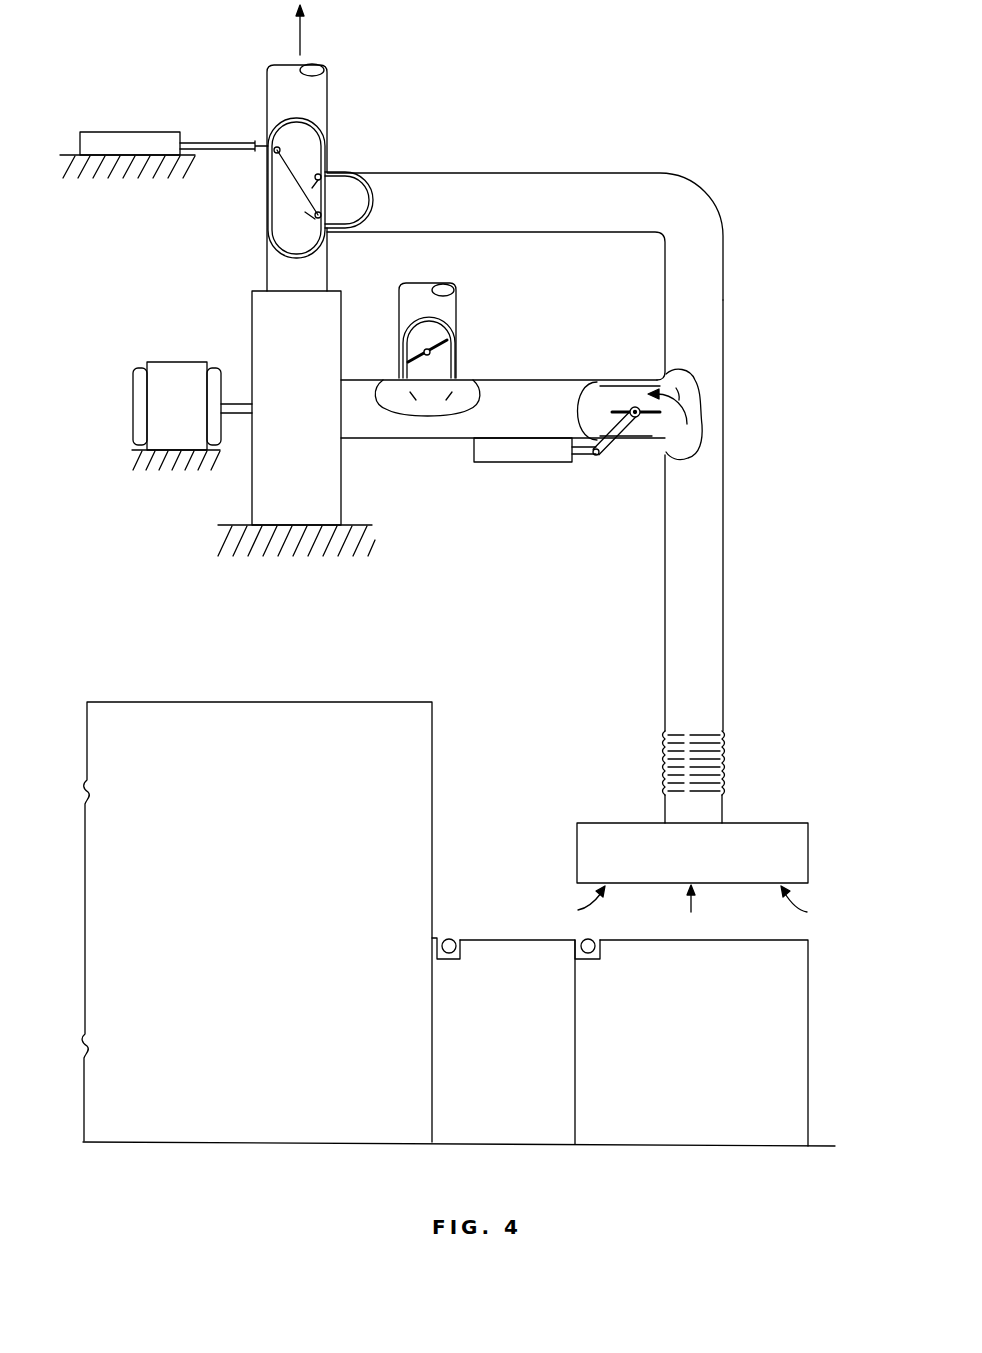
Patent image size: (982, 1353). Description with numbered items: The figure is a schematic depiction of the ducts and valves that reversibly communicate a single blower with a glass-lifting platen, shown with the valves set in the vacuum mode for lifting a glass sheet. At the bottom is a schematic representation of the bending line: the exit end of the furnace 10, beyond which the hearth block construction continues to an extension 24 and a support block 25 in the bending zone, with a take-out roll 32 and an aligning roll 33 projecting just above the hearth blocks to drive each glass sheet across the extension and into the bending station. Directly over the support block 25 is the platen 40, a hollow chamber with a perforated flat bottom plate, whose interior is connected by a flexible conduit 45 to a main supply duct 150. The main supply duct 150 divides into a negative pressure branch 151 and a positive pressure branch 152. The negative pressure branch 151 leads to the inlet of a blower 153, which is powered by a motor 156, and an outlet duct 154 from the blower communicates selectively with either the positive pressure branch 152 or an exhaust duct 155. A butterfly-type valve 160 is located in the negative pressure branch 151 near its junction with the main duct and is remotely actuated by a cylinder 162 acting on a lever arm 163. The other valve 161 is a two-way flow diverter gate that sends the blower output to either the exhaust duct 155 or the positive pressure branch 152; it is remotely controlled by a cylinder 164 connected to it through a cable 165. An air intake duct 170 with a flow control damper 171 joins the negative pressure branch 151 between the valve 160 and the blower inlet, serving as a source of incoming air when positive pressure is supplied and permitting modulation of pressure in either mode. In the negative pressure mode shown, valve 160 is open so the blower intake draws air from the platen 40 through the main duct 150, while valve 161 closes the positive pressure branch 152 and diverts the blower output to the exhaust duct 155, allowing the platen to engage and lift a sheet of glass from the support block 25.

The furnace 10 is at (257, 702).
The extension 24 is at (491, 940).
The support block 25 is at (768, 940).
The take-out roll 32 is at (452, 938).
The aligning roll 33 is at (585, 940).
The platen 40 is at (767, 823).
The flexible conduit 45 is at (665, 762).
The main supply duct 150 is at (665, 605).
The negative pressure branch 151 is at (548, 380).
The positive pressure branch 152 is at (590, 173).
The blower 153 is at (341, 488).
The outlet duct 154 is at (327, 263).
The exhaust duct 155 is at (327, 103).
The motor 156 is at (178, 365).
The valve 160 is at (656, 413).
The valve 161 is at (330, 202).
The cylinder 162 is at (532, 462).
The lever arm 163 is at (603, 452).
The cylinder 164 is at (150, 132).
The cable 165 is at (312, 180).
The air intake duct 170 is at (457, 308).
The flow control damper 171 is at (444, 341).